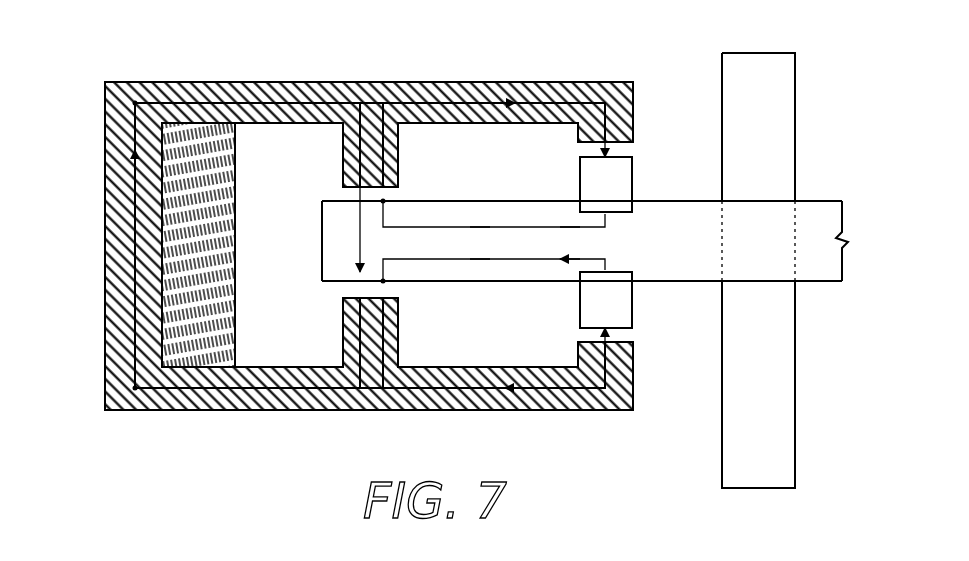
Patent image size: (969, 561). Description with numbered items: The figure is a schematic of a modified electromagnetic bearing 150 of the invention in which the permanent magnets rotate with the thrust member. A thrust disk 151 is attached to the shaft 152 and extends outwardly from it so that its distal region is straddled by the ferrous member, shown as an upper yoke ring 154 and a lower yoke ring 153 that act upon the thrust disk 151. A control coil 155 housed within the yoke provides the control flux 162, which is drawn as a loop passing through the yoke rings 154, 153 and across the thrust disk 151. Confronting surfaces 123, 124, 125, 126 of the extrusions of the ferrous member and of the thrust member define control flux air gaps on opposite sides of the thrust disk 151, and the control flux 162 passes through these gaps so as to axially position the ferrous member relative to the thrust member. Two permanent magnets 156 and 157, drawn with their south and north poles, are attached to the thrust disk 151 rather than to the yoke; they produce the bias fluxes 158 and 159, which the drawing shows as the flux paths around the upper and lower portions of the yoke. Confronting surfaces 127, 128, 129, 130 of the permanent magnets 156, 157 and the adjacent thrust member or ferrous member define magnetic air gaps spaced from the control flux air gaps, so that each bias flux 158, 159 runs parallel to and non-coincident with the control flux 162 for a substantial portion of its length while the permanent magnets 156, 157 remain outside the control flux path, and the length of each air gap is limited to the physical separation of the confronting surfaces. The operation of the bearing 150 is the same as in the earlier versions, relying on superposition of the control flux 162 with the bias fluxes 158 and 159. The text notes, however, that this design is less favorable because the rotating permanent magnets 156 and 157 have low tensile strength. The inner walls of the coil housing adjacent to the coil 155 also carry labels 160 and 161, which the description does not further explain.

The bearing 150 is at (122, 52).
The thrust disk 151 is at (800, 201).
The shaft 152 is at (798, 393).
The lower yoke ring 153 is at (258, 410).
The upper yoke ring 154 is at (255, 82).
The control coil 155 is at (236, 235).
The permanent magnet 156 is at (636, 175).
The permanent magnet 157 is at (636, 305).
The bias flux 158 is at (478, 82).
The bias flux 159 is at (482, 410).
The inner core wall 160 is at (343, 170).
The lower inner core wall 161 is at (345, 337).
The control flux 162 is at (121, 322).
The confronting surface 123 is at (398, 188).
The confronting surface 124 is at (407, 200).
The confronting surface 125 is at (347, 300).
The confronting surface 126 is at (330, 287).
The confronting surface 127 is at (628, 148).
The confronting surface 128 is at (615, 150).
The confronting surface 129 is at (580, 330).
The confronting surface 130 is at (583, 342).